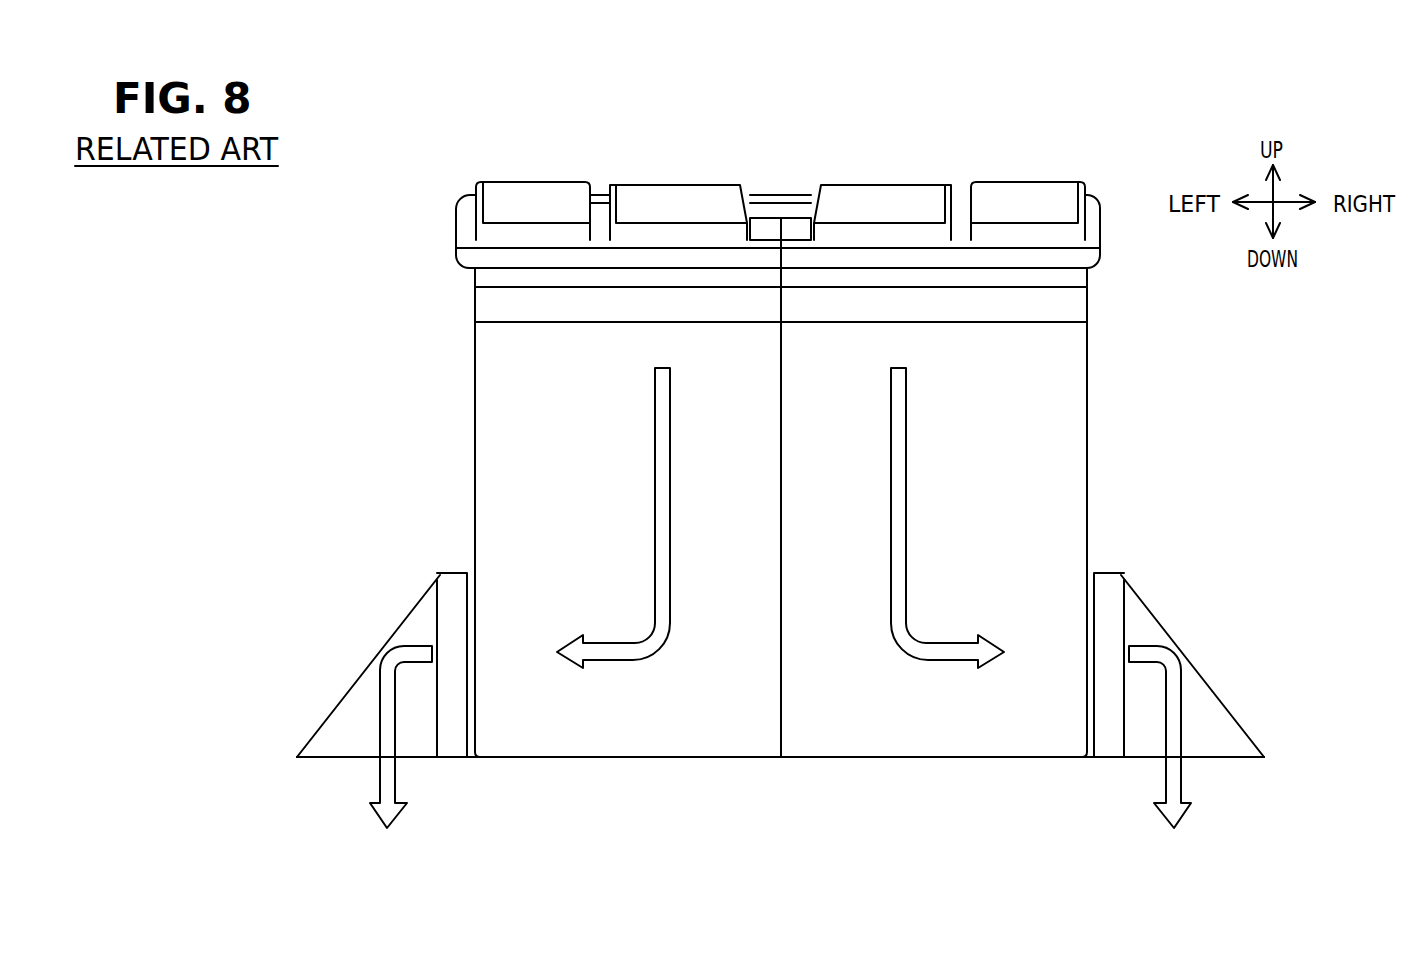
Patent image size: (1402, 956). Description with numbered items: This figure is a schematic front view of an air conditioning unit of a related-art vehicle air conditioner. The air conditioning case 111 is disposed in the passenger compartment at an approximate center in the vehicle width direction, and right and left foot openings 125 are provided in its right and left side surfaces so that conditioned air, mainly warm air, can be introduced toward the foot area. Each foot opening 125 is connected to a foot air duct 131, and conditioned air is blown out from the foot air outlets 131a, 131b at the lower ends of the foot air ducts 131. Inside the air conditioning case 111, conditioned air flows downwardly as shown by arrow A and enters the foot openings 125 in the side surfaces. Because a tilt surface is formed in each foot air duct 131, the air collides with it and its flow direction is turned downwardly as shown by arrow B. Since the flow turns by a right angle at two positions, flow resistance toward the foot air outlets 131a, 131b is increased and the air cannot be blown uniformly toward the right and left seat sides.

The air conditioning case 111 is at (733, 708).
The foot opening 125 is at (1091, 597).
The foot air duct 131 is at (1166, 625).
The foot air outlet 131a is at (327, 760).
The foot air outlet 131b is at (1234, 760).
The arrow A is at (906, 478).
The arrow B is at (1174, 708).